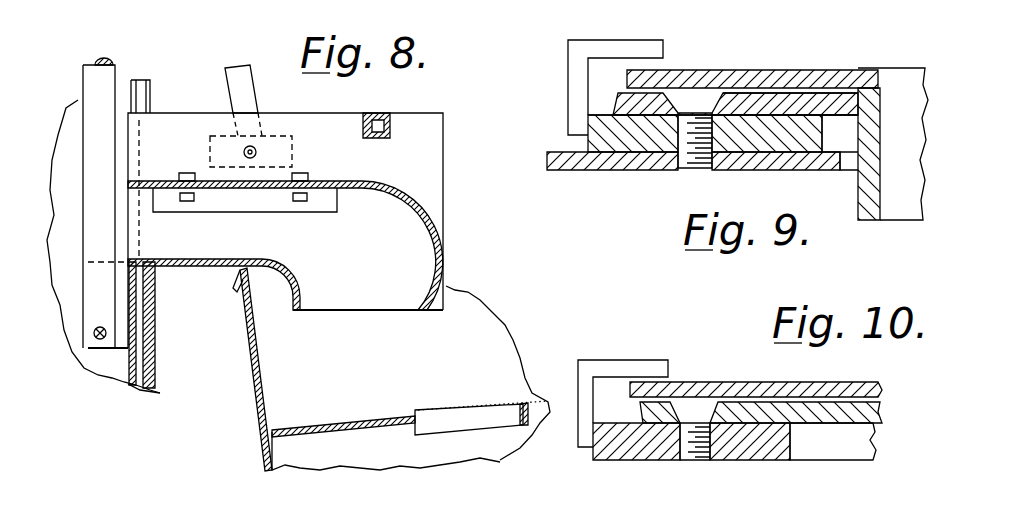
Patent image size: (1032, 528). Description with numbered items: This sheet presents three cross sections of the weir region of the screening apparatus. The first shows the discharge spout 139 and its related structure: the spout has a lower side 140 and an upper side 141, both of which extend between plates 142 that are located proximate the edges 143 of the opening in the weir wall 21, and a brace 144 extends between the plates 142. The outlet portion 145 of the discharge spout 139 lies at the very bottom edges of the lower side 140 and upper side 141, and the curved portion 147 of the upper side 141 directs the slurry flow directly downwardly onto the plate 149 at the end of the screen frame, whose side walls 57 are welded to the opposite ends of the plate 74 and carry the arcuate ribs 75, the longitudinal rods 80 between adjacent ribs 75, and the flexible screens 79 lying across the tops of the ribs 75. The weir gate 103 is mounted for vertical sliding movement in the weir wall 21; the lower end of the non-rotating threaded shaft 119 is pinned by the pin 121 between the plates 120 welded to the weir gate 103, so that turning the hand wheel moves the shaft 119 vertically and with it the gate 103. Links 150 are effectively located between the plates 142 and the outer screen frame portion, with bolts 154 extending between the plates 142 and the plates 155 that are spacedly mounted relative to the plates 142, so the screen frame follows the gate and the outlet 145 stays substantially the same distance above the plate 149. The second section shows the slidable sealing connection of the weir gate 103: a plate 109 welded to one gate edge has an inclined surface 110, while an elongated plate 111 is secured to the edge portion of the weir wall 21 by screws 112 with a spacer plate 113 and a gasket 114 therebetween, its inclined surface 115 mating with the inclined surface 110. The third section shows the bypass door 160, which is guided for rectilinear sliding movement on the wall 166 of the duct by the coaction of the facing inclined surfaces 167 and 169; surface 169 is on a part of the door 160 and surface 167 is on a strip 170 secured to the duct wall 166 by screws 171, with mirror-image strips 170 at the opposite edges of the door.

In FIG. 8, the threaded shaft 119 is at (78, 72).
In FIG. 8, the pin 121 is at (98, 345).
In FIG. 8, the plates 120 is at (116, 352).
In FIG. 8, the weir gate 103 is at (133, 384).
In FIG. 9, the weir gate 103 is at (857, 70).
In FIG. 8, the edges of the opening in weir wall 143 is at (143, 97).
In FIG. 9, the edges of the opening in weir wall 143 is at (853, 153).
In FIG. 8, the plates 142 is at (412, 120).
In FIG. 9, the plates 142 is at (860, 203).
In FIG. 8, the plate 109 is at (140, 358).
In FIG. 9, the plate 109 is at (833, 97).
In FIG. 8, the spacer plate 113 is at (148, 335).
In FIG. 9, the spacer plate 113 is at (612, 147).
In FIG. 8, the weir wall 21 is at (160, 384).
In FIG. 9, the weir wall 21 is at (635, 167).
In FIG. 8, the discharge spout 139 is at (403, 180).
In FIG. 8, the upper side 141 is at (432, 218).
In FIG. 8, the outlet portion 145 is at (370, 311).
In FIG. 8, the lower side 140 is at (203, 266).
In FIG. 8, the brace 144 is at (362, 120).
In FIG. 8, the links 150 is at (238, 67).
In FIG. 8, the plates 155 is at (230, 134).
In FIG. 8, the bolts 154 is at (257, 152).
In FIG. 8, the curved portion 147 is at (450, 284).
In FIG. 8, the plate 74 is at (266, 463).
In FIG. 8, the side walls 57 is at (365, 460).
In FIG. 8, the plate 149 is at (360, 418).
In FIG. 8, the rods 80 is at (447, 430).
In FIG. 8, the ribs 75 is at (514, 425).
In FIG. 8, the flexible screens 79 is at (484, 402).
In FIG. 9, the elongated plate 111 is at (612, 87).
In FIG. 9, the gasket 114 is at (613, 107).
In FIG. 9, the screws 112 is at (698, 95).
In FIG. 9, the inclined surface 110 is at (754, 90).
In FIG. 9, the inclined surface 115 is at (803, 80).
In FIG. 10, the bypass door 160 is at (862, 382).
In FIG. 10, the inclined surface 167 is at (788, 382).
In FIG. 10, the inclined surface 169 is at (747, 403).
In FIG. 10, the screws 171 is at (686, 405).
In FIG. 10, the strip 170 is at (630, 425).
In FIG. 10, the wall of duct 166 is at (770, 457).